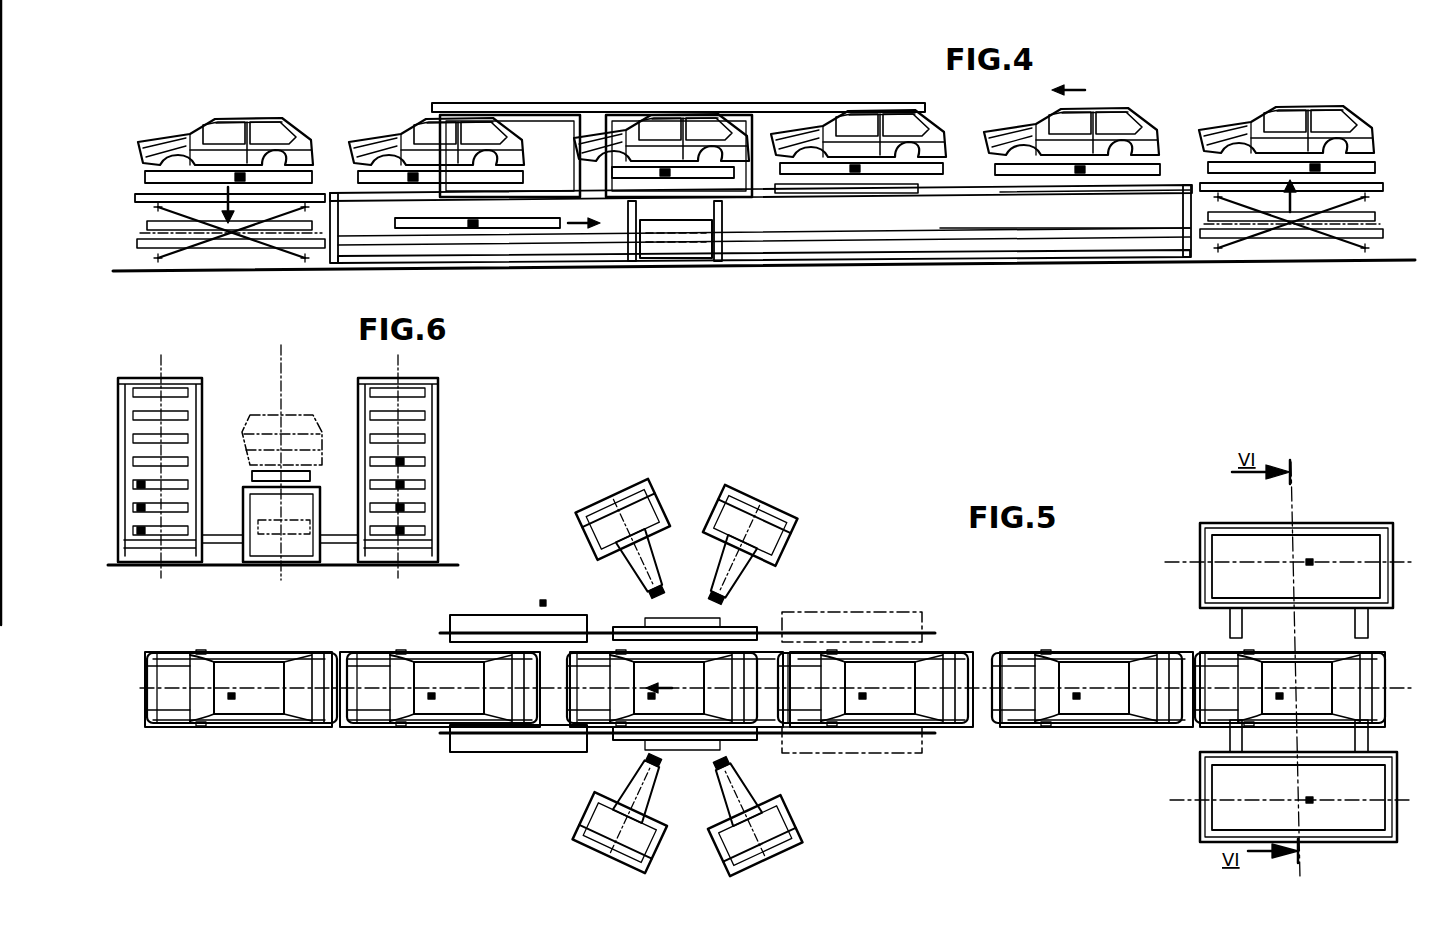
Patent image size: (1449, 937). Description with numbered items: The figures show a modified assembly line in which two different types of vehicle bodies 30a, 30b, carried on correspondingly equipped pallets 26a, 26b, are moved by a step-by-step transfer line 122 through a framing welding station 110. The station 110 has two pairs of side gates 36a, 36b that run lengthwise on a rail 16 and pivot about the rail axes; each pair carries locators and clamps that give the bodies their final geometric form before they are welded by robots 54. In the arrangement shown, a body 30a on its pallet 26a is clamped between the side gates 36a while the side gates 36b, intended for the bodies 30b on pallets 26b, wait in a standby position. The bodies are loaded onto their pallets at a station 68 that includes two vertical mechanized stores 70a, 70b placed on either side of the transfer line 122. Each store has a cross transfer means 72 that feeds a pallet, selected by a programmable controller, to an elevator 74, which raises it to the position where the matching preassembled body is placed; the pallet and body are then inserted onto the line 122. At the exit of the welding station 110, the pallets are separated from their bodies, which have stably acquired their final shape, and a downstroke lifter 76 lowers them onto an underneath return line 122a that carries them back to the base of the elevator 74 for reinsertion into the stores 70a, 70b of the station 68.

In FIG. 4, the rail 16 is at (510, 103).
In FIG. 5, the rail 16 is at (884, 612).
In FIG. 4, the pallet 26a is at (292, 178).
In FIG. 6, the pallet 26a is at (445, 492).
In FIG. 4, the pallet 26b is at (395, 182).
In FIG. 6, the pallet 26b is at (180, 492).
In FIG. 4, the body 30a is at (305, 130).
In FIG. 5, the body 30a is at (280, 662).
In FIG. 4, the body 30b is at (392, 142).
In FIG. 5, the body 30b is at (386, 666).
In FIG. 4, the side gates 36a is at (616, 120).
In FIG. 5, the side gates 36a is at (622, 628).
In FIG. 4, the side gates 36b is at (583, 138).
In FIG. 5, the side gates 36b is at (512, 628).
In FIG. 5, the robots 54 is at (656, 500).
In FIG. 6, the station 68 is at (288, 405).
In FIG. 5, the station 68 is at (1188, 560).
In FIG. 6, the vertical mechanized store 70a is at (443, 416).
In FIG. 5, the vertical mechanized store 70a is at (1196, 776).
In FIG. 6, the vertical mechanized store 70b is at (208, 396).
In FIG. 5, the vertical mechanized store 70b is at (1330, 524).
In FIG. 6, the cross transfer means 72 is at (228, 536).
In FIG. 5, the cross transfer means 72 is at (1232, 626).
In FIG. 4, the elevator 74 is at (1305, 236).
In FIG. 6, the elevator 74 is at (268, 508).
In FIG. 4, the downstroke lifter 76 is at (178, 216).
In FIG. 4, the framing welding station 110 is at (668, 96).
In FIG. 5, the framing welding station 110 is at (545, 598).
In FIG. 4, the transfer line 122 is at (1045, 222).
In FIG. 5, the transfer line 122 is at (972, 668).
In FIG. 4, the underneath return line 122a is at (940, 234).